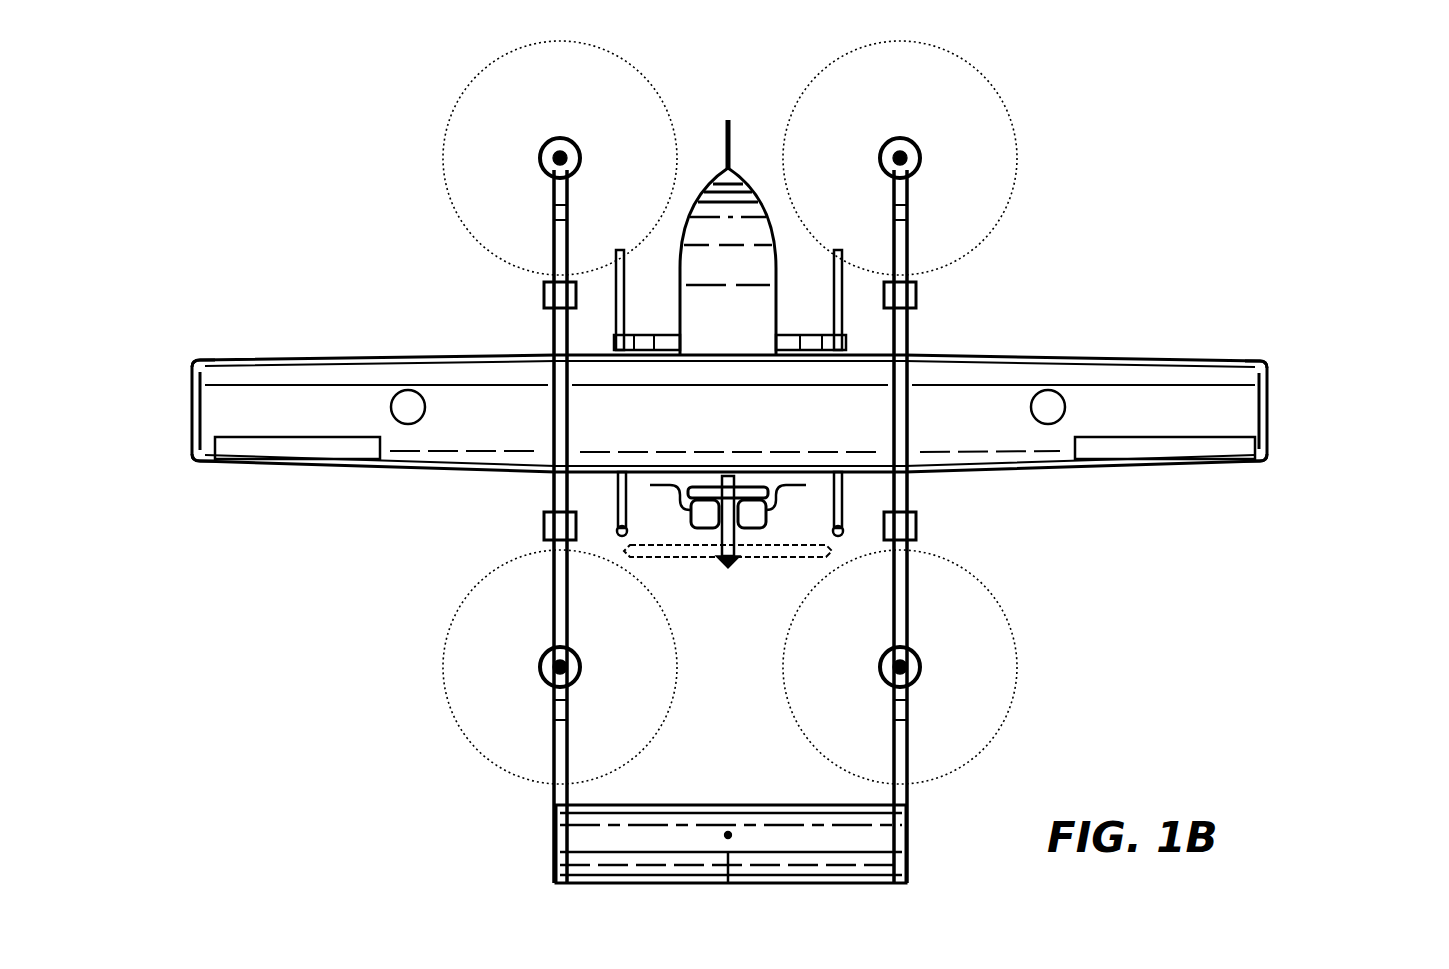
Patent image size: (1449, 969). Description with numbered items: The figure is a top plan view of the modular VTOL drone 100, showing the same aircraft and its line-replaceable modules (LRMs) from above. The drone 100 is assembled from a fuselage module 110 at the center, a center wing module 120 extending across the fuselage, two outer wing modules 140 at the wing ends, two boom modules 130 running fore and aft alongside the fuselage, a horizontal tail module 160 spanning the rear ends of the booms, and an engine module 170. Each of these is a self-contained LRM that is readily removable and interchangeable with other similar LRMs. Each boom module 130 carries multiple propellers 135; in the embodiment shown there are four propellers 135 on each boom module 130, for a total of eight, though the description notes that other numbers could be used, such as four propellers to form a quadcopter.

The drone 100 is at (322, 108).
The fuselage module 110 is at (750, 302).
The center wing module 120 is at (842, 417).
The boom module 130 is at (555, 337).
The propeller 135 is at (453, 672).
The outer wing module 140 is at (245, 418).
The horizontal tail module 160 is at (590, 848).
The engine module 170 is at (670, 507).